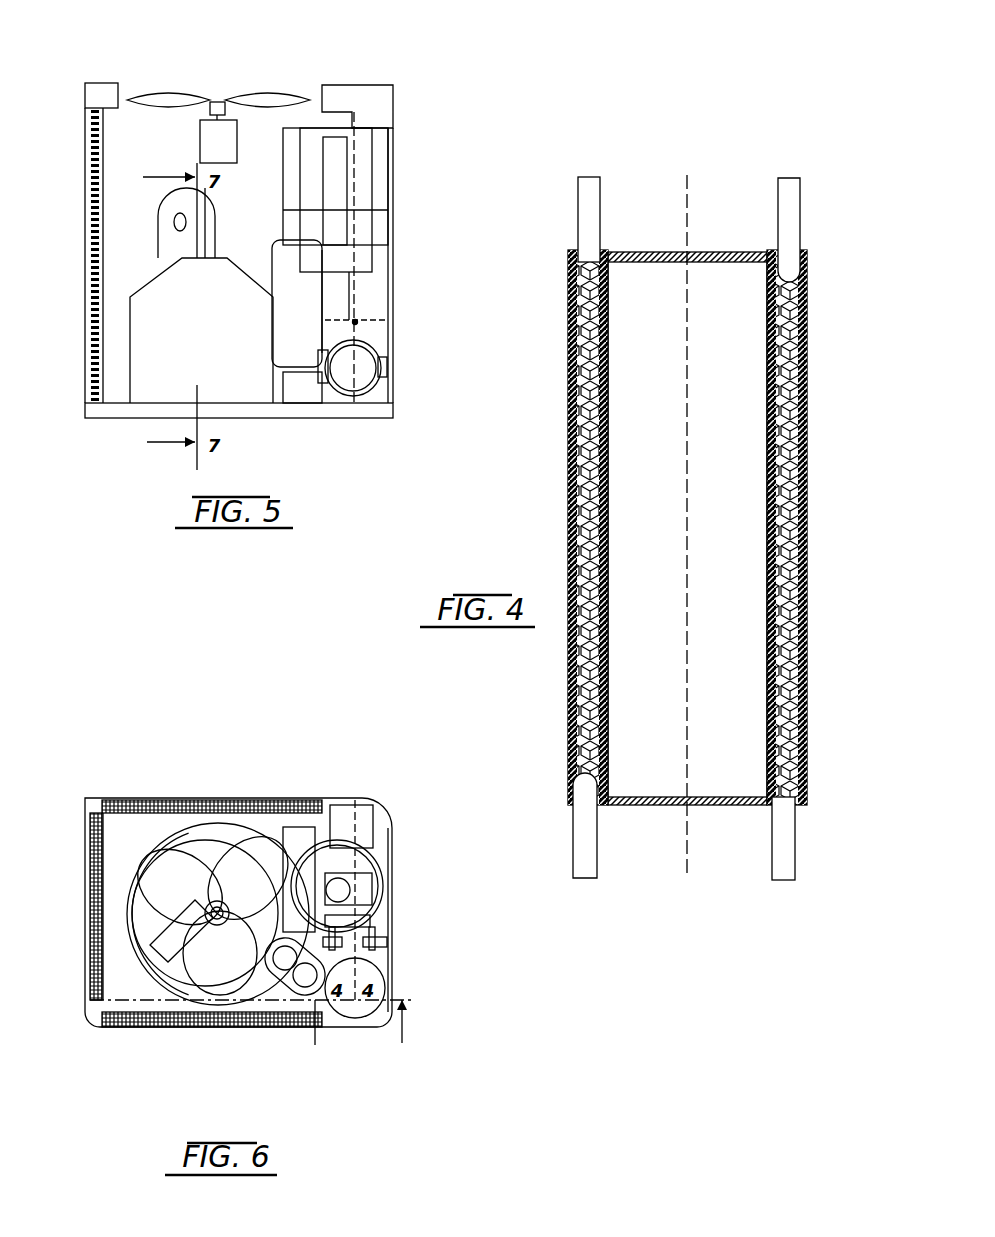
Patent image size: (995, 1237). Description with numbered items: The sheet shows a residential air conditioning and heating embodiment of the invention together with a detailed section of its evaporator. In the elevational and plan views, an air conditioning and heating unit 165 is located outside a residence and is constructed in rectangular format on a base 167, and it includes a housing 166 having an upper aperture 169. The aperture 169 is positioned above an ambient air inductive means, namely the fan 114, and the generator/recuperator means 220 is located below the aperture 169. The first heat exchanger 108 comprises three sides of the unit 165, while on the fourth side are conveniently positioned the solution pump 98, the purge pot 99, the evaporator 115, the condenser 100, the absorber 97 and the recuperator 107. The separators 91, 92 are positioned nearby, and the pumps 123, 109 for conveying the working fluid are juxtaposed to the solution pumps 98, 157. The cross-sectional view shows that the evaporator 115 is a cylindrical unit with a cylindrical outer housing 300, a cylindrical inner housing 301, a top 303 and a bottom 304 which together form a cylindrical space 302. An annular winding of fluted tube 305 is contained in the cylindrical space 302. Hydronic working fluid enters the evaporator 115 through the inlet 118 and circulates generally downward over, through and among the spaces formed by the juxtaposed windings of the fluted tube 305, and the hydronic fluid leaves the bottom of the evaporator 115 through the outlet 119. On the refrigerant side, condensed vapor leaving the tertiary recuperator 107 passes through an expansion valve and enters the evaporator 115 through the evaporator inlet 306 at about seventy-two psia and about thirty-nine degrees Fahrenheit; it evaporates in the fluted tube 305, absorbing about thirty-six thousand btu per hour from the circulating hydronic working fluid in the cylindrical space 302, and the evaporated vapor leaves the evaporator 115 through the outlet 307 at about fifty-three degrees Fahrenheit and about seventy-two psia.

In FIG. 6, the separator 91 is at (293, 993).
In FIG. 6, the separator 92 is at (263, 1015).
In FIG. 5, the absorber 97 is at (397, 127).
In FIG. 6, the absorber 97 is at (383, 917).
In FIG. 5, the solution pump 98 is at (383, 373).
In FIG. 6, the solution pump 98 is at (352, 858).
In FIG. 5, the purge pot 99 is at (357, 322).
In FIG. 6, the purge pot 99 is at (352, 885).
In FIG. 5, the condenser 100 is at (373, 168).
In FIG. 6, the condenser 100 is at (372, 892).
In FIG. 5, the recuperator 107 is at (390, 227).
In FIG. 5, the first heat exchanger 108 is at (92, 152).
In FIG. 6, the first heat exchanger 108 is at (205, 807).
In FIG. 6, the pump 109 is at (377, 950).
In FIG. 5, the fan 114 is at (275, 103).
In FIG. 6, the fan 114 is at (218, 1007).
In FIG. 5, the evaporator 115 is at (398, 302).
In FIG. 4, the evaporator 115 is at (648, 150).
In FIG. 6, the evaporator 115 is at (355, 1028).
In FIG. 4, the inlet 118 is at (590, 193).
In FIG. 4, the outlet 119 is at (782, 845).
In FIG. 6, the pump 123 is at (343, 952).
In FIG. 6, the solution pump 157 is at (292, 828).
In FIG. 5, the air conditioning and heating unit 165 is at (333, 65).
In FIG. 6, the air conditioning and heating unit 165 is at (165, 1072).
In FIG. 5, the housing 166 is at (367, 85).
In FIG. 6, the housing 166 is at (392, 828).
In FIG. 5, the base 167 is at (343, 412).
In FIG. 5, the upper aperture 169 is at (165, 45).
In FIG. 6, the upper aperture 169 is at (167, 835).
In FIG. 5, the generator/recuperator means 220 is at (128, 328).
In FIG. 6, the generator/recuperator means 220 is at (202, 840).
In FIG. 4, the cylindrical outer housing 300 is at (803, 447).
In FIG. 4, the cylindrical inner housing 301 is at (767, 528).
In FIG. 4, the cylindrical space 302 is at (793, 535).
In FIG. 4, the top 303 is at (703, 252).
In FIG. 4, the bottom 304 is at (637, 803).
In FIG. 4, the fluted tube 305 is at (793, 647).
In FIG. 4, the evaporator inlet 306 is at (590, 865).
In FIG. 4, the outlet 307 is at (785, 193).